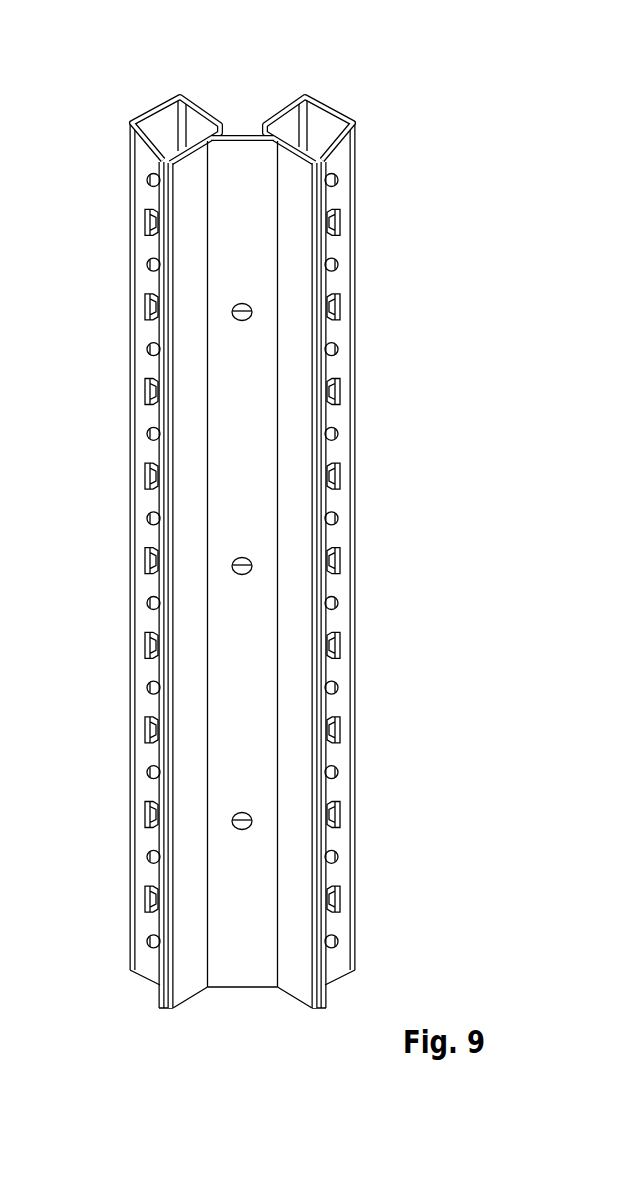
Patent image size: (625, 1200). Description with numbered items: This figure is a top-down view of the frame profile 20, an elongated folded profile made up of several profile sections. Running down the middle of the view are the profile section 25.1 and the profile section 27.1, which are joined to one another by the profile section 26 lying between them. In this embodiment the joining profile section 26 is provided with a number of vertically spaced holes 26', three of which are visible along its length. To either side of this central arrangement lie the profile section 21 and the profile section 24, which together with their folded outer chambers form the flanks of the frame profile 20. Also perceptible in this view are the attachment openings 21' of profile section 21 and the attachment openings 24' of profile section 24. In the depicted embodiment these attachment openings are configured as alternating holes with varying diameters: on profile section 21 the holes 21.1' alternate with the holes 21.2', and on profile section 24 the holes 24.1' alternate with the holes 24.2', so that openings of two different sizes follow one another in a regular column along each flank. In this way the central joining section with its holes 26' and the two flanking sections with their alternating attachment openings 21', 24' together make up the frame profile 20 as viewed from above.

The frame profile 20 is at (458, 305).
The profile section 21 is at (135, 513).
The attachment openings 21' is at (171, 91).
The holes 21.1' is at (104, 224).
The holes 21.2' is at (105, 270).
The profile section 24 is at (350, 513).
The attachment openings 24' is at (315, 91).
The holes 24.1' is at (381, 224).
The holes 24.2' is at (380, 270).
The profile section 25.1 is at (288, 577).
The profile section 26 is at (312, 562).
The holes 26' is at (323, 820).
The profile section 27.1 is at (192, 578).